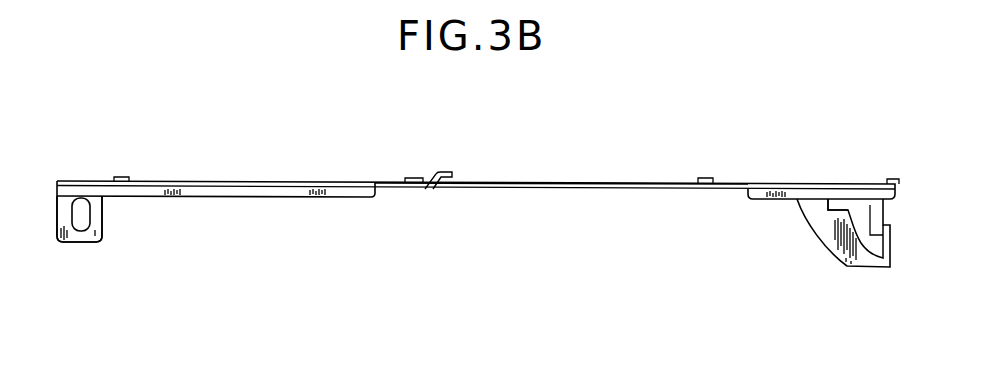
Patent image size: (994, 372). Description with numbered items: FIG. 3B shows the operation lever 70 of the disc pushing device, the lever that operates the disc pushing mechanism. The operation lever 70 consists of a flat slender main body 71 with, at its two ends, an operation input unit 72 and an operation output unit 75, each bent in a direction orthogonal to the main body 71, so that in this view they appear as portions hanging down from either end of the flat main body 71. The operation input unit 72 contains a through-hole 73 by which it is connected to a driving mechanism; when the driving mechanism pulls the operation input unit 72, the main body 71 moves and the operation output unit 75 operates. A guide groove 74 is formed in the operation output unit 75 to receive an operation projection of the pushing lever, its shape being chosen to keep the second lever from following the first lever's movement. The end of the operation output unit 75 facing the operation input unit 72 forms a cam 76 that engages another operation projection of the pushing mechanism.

The operation lever 70 is at (518, 274).
The main body 71 is at (528, 183).
The operation input unit 72 is at (101, 227).
The through-hole 73 is at (82, 224).
The guide groove 74 is at (853, 212).
The operation output unit 75 is at (814, 254).
The cam 76 is at (845, 268).